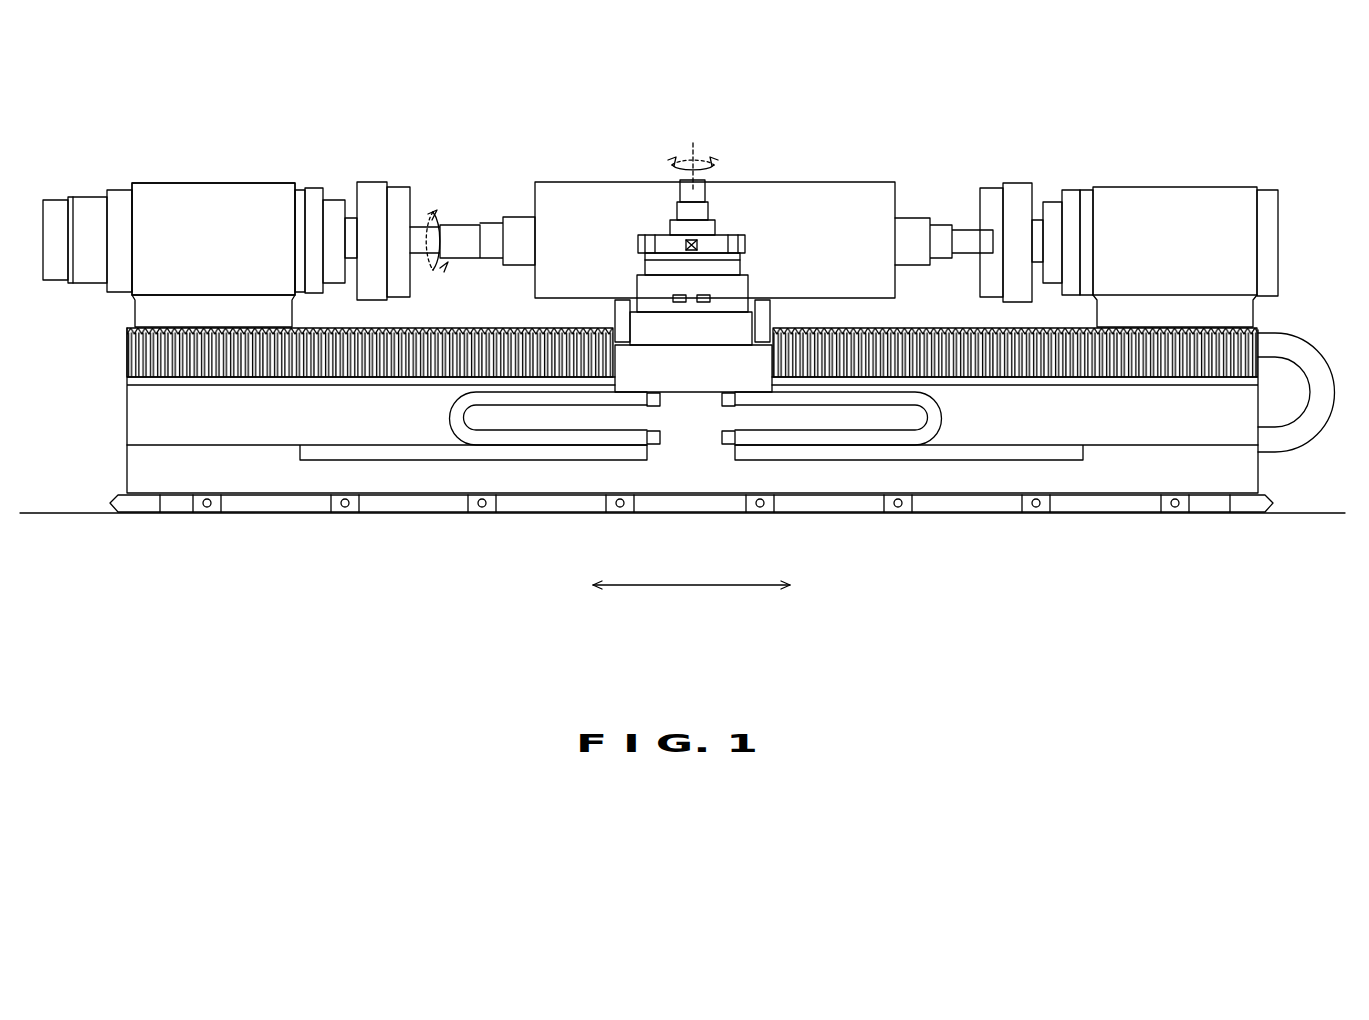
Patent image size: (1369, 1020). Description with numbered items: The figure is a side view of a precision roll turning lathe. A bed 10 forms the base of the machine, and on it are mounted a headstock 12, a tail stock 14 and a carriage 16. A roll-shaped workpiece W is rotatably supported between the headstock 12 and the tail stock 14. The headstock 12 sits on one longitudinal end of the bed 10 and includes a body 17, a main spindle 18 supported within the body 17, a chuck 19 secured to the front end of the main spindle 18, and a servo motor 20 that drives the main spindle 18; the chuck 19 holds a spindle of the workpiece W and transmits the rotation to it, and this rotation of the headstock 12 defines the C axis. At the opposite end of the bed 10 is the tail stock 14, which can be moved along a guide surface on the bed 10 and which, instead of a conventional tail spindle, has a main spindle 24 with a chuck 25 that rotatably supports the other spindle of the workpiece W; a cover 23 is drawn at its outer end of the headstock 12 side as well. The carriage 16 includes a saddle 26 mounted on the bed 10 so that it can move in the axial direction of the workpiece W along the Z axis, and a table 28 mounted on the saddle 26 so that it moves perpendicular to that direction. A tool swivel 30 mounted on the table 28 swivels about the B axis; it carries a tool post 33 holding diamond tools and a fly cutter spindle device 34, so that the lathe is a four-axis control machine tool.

The bed 10 is at (150, 417).
The headstock 12 is at (196, 181).
The tail stock 14 is at (1171, 184).
The carriage 16 is at (722, 224).
The body 17 is at (162, 215).
The main spindle 18 is at (335, 213).
The chuck 19 is at (375, 197).
The servo motor 20 is at (93, 263).
The cover 23 is at (55, 222).
The main spindle 24 is at (1048, 213).
The chuck 25 is at (1017, 197).
The saddle 26 is at (697, 372).
The table 28 is at (728, 293).
The tool swivel 30 is at (653, 267).
The tool post 33 is at (662, 237).
The fly cutter spindle device 34 is at (720, 206).
The workpiece W is at (806, 200).
The B axis B is at (684, 166).
The C axis C is at (437, 227).
The Z axis Z is at (691, 573).